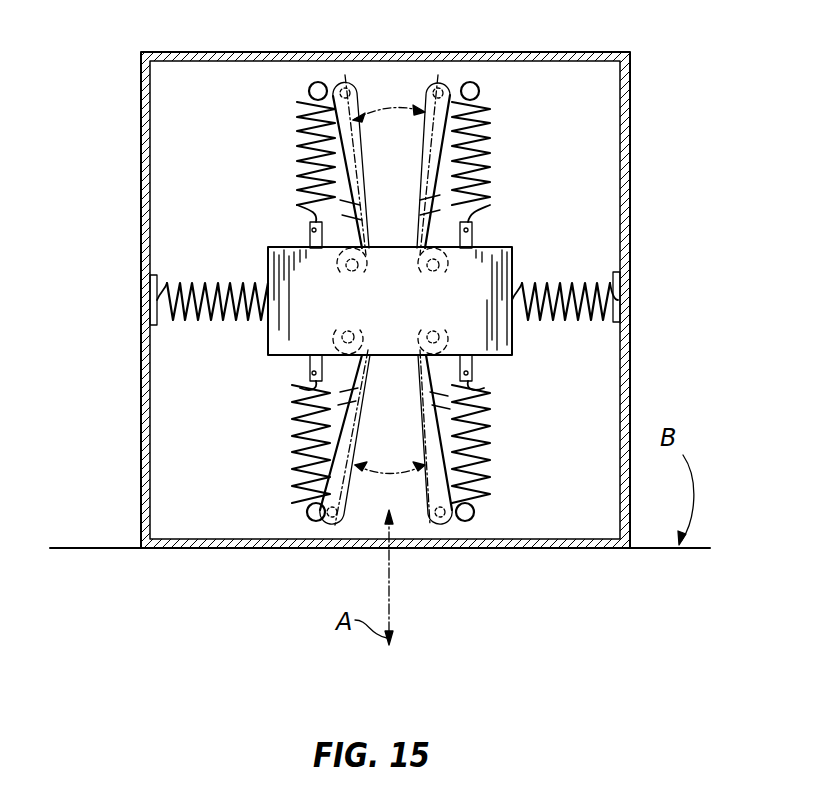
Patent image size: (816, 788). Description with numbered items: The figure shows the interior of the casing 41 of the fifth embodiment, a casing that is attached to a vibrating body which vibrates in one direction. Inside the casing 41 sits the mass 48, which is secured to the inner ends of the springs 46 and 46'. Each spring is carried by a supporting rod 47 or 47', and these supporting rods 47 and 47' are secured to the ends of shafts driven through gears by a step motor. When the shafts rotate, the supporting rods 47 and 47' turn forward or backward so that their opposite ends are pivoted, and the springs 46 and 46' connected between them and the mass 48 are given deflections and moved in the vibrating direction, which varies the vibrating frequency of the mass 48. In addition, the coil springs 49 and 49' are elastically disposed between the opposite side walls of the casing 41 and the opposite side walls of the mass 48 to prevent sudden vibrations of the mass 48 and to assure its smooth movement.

The casing 41 is at (524, 52).
The spring 46 is at (389, 301).
The spring 46' is at (391, 301).
The supporting rod 47 is at (398, 300).
The supporting rod 47' is at (444, 300).
The mass 48 is at (268, 262).
The coil spring 49 is at (565, 272).
The coil spring 49' is at (212, 333).